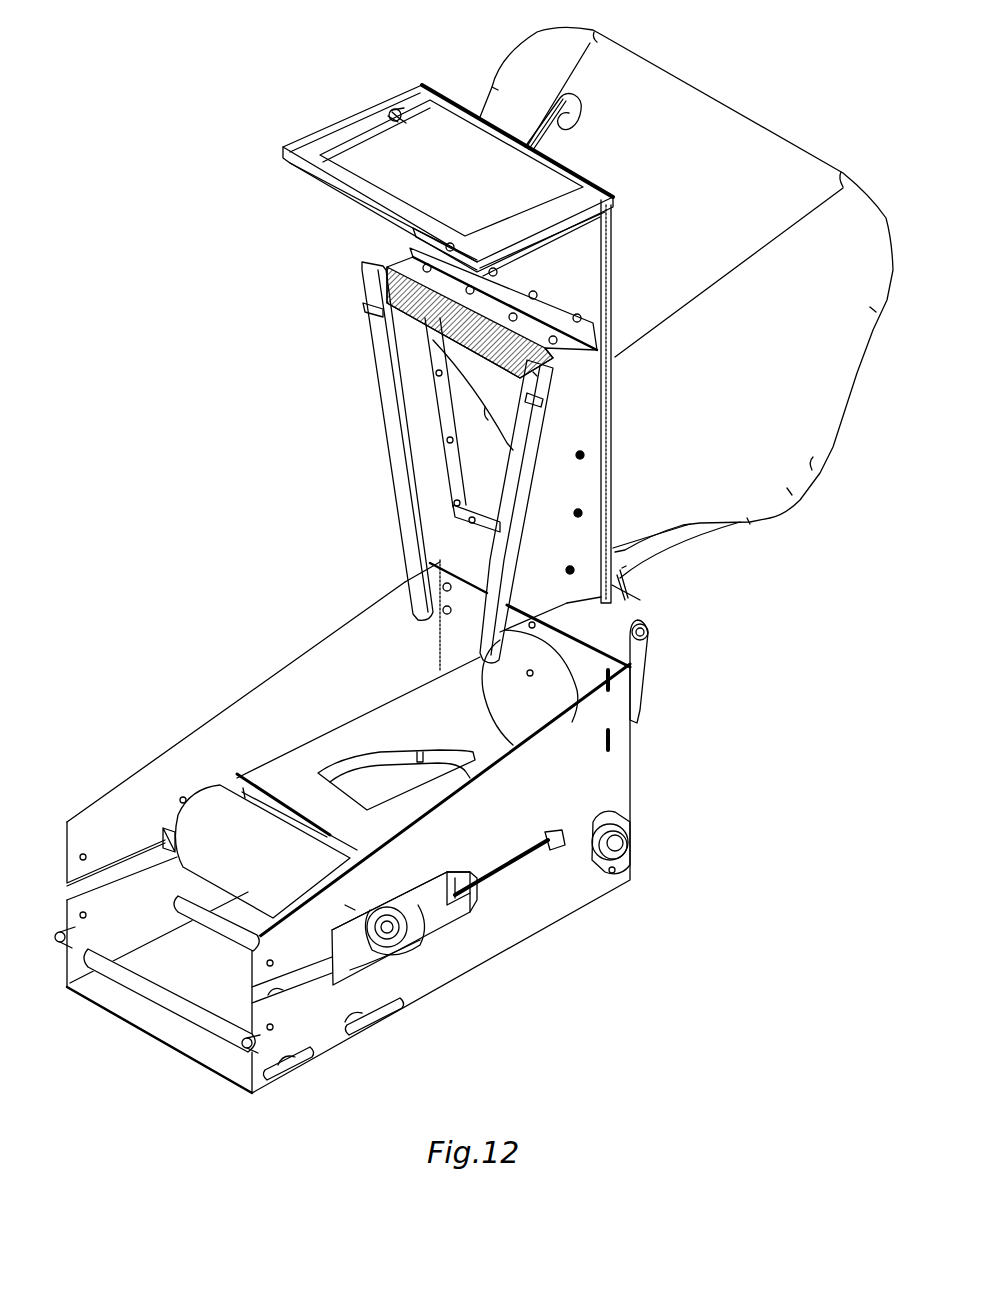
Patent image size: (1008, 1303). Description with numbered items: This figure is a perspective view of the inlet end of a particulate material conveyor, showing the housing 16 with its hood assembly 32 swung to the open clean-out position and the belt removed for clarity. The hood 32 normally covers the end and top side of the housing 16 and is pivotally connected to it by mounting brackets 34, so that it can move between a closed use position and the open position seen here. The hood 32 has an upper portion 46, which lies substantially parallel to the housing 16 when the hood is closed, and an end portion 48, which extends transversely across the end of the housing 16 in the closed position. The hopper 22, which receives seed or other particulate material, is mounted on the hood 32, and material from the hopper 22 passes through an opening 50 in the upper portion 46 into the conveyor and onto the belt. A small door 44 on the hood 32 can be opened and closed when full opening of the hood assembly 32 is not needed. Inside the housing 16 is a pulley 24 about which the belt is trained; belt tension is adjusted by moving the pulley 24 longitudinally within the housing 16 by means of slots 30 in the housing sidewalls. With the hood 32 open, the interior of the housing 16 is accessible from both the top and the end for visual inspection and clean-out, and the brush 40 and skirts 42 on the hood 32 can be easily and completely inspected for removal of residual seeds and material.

The housing 16 is at (607, 760).
The hopper 22 is at (788, 489).
The pulley 24 is at (208, 797).
The slots 30 is at (273, 987).
The hood assembly 32 is at (412, 128).
The mounting brackets 34 is at (640, 650).
The brush 40 is at (403, 317).
The skirts 42 is at (430, 463).
The small door 44 is at (385, 173).
The upper portion 46 is at (572, 255).
The end portion 48 is at (348, 128).
The opening 50 is at (473, 387).